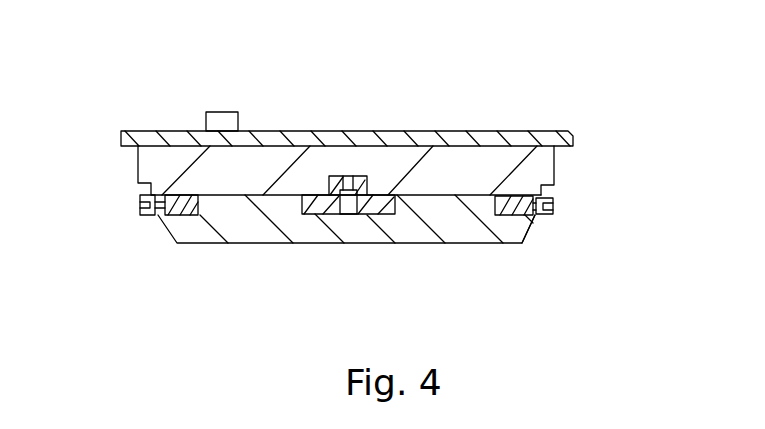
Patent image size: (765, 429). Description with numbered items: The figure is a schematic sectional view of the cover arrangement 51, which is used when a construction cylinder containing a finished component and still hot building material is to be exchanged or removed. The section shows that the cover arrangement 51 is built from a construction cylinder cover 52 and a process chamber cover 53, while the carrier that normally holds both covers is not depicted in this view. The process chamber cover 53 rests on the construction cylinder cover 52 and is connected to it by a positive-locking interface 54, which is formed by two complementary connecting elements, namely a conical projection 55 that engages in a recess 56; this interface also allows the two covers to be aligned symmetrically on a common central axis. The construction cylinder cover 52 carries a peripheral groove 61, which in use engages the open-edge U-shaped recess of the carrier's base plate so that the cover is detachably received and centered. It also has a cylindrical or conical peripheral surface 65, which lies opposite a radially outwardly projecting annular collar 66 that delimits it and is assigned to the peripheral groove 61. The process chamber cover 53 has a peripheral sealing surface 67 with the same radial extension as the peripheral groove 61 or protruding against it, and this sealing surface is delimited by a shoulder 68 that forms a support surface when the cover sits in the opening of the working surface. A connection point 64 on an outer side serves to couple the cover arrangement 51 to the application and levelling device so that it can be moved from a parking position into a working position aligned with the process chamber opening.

The cover arrangement 51 is at (498, 95).
The construction cylinder cover 52 is at (465, 223).
The process chamber cover 53 is at (390, 136).
The positive-locking interface 54 is at (388, 180).
The conical projection 55 is at (373, 215).
The recess 56 is at (302, 214).
The peripheral groove 61 is at (132, 204).
The connection point 64 is at (222, 118).
The peripheral surface 65 is at (542, 232).
The annular collar 66 is at (543, 214).
The peripheral sealing surface 67 is at (558, 157).
The shoulder 68 is at (570, 131).